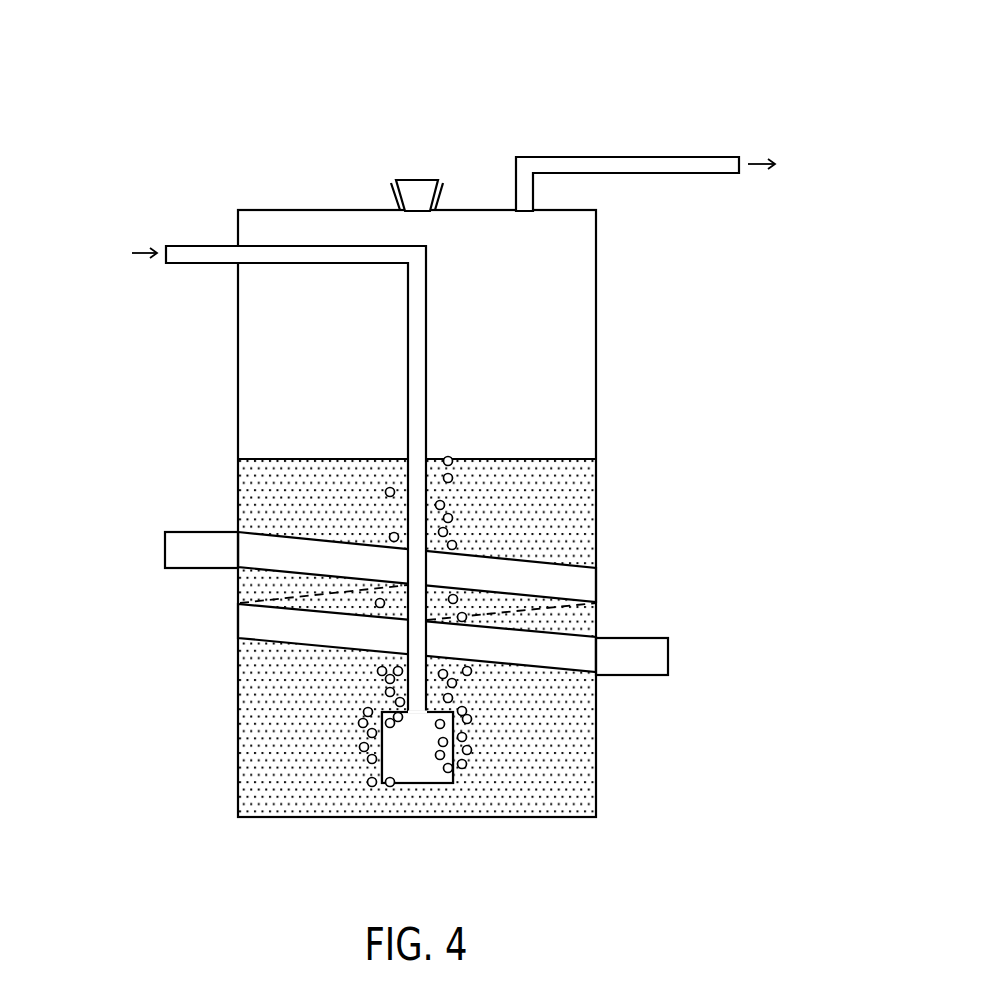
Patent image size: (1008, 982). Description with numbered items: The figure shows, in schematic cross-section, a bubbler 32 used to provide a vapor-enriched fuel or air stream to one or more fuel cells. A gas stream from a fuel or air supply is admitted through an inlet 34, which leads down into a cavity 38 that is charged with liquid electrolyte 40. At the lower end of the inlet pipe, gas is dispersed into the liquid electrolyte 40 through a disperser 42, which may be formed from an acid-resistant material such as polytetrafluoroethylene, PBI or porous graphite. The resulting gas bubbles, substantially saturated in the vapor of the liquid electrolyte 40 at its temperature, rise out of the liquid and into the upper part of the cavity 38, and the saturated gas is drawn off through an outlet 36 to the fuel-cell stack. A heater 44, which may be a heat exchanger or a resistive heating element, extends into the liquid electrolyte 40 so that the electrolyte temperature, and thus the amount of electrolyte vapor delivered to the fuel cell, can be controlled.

The bubbler 32 is at (280, 57).
The inlet 34 is at (202, 263).
The outlet 36 is at (704, 174).
The cavity 38 is at (315, 437).
The liquid electrolyte 40 is at (315, 510).
The disperser 42 is at (428, 757).
The heater 44 is at (182, 561).